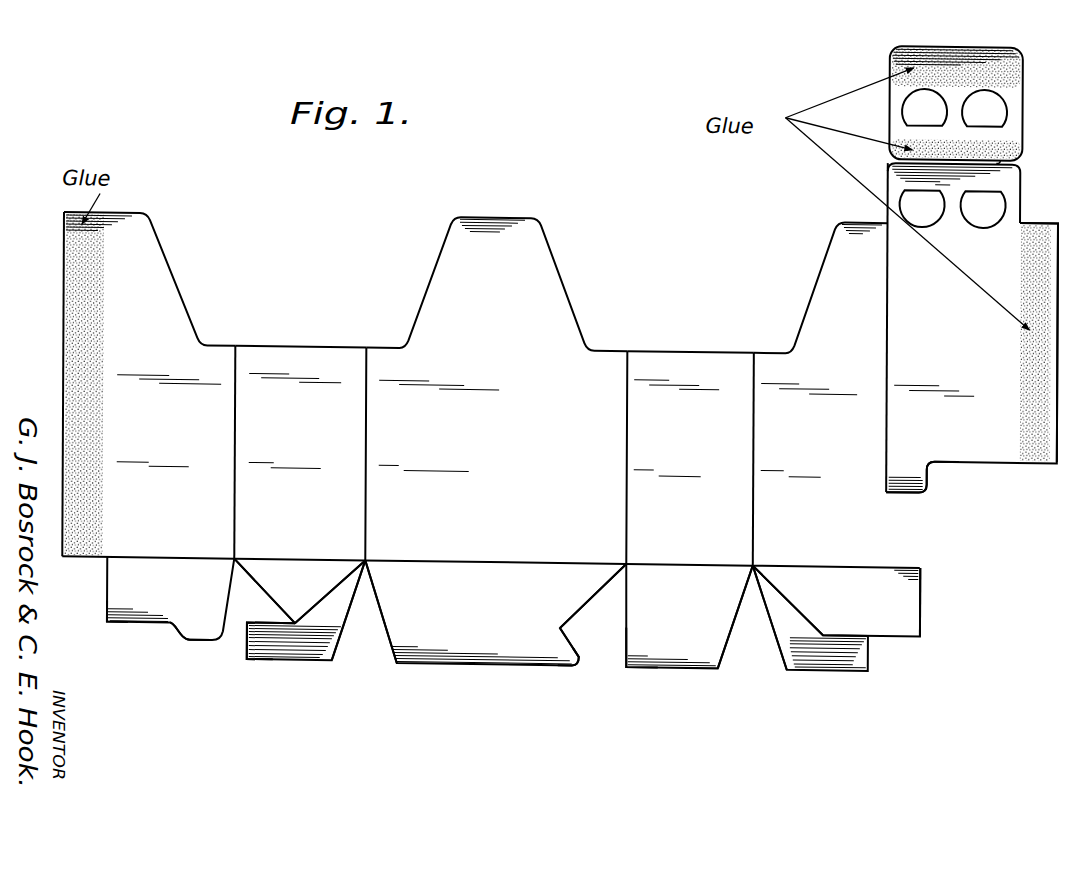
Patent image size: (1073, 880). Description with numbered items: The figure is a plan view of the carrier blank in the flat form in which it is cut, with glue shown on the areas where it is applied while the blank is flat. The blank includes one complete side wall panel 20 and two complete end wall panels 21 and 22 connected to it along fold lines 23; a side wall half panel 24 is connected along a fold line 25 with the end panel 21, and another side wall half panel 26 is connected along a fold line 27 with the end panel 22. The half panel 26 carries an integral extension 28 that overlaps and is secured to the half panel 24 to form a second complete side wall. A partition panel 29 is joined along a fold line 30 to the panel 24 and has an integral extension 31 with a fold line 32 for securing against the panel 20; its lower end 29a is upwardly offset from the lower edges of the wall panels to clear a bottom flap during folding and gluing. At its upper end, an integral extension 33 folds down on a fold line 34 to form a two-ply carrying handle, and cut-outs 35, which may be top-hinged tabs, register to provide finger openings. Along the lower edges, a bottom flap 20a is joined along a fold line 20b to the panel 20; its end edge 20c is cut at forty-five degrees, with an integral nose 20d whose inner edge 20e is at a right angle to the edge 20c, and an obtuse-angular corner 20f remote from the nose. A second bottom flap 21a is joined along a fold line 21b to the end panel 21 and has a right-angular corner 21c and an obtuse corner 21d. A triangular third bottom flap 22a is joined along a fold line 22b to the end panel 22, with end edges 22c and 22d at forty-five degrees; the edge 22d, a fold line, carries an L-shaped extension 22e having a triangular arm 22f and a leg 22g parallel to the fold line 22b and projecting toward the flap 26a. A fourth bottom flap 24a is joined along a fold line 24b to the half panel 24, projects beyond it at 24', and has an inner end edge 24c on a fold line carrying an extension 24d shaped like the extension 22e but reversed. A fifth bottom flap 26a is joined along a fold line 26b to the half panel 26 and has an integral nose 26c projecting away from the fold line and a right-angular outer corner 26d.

The side wall panel 20 is at (497, 345).
The bottom flap 20a is at (496, 613).
The fold line 20b is at (490, 554).
The end edge 20c is at (588, 595).
The nose 20d is at (576, 650).
The inner edge 20e is at (583, 638).
The corner 20f is at (400, 656).
The end wall panel 21 is at (690, 414).
The bottom flap 21a is at (689, 616).
The fold line 21b is at (698, 554).
The right-angular corner 21c is at (633, 653).
The obtuse angular corner 21d is at (720, 655).
The end wall panel 22 is at (301, 407).
The bottom flap 22a is at (299, 591).
The fold line 22b is at (305, 548).
The end edge 22c is at (256, 582).
The end edge 22d is at (318, 600).
The extension 22e is at (331, 657).
The arm 22f is at (342, 606).
The leg 22g is at (273, 648).
The fold lines 23 is at (367, 429).
The side wall half panel 24 is at (820, 349).
The projecting portion 24' is at (948, 602).
The bottom flap 24a is at (836, 601).
The fold line 24b is at (826, 554).
The inner end edge 24c is at (804, 605).
The extension 24d is at (776, 620).
The fold line 25 is at (754, 432).
The side wall half panel 26 is at (149, 339).
The bottom flap 26a is at (170, 598).
The fold line 26b is at (186, 548).
The nose 26c is at (200, 628).
The outer corner 26d is at (112, 626).
The fold line 27 is at (236, 430).
The extension 28 is at (64, 372).
The partition panel 29 is at (972, 357).
The lower end 29a is at (976, 452).
The fold line 30 is at (888, 298).
The extension 31 is at (1040, 210).
The fold line 32 is at (1020, 248).
The extension 33 is at (1030, 77).
The fold line 34 is at (990, 151).
The cut-outs 35 is at (982, 97).